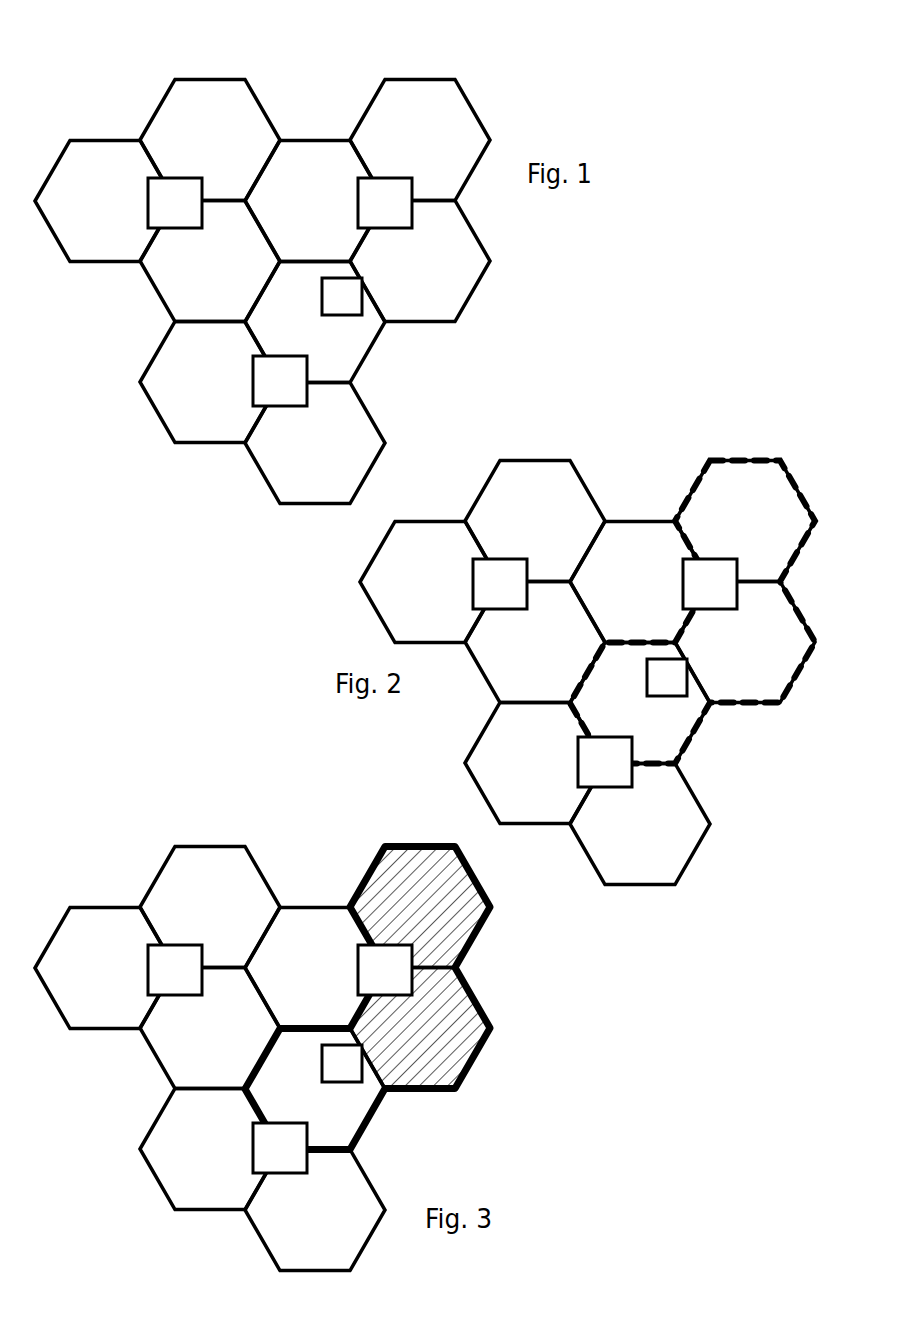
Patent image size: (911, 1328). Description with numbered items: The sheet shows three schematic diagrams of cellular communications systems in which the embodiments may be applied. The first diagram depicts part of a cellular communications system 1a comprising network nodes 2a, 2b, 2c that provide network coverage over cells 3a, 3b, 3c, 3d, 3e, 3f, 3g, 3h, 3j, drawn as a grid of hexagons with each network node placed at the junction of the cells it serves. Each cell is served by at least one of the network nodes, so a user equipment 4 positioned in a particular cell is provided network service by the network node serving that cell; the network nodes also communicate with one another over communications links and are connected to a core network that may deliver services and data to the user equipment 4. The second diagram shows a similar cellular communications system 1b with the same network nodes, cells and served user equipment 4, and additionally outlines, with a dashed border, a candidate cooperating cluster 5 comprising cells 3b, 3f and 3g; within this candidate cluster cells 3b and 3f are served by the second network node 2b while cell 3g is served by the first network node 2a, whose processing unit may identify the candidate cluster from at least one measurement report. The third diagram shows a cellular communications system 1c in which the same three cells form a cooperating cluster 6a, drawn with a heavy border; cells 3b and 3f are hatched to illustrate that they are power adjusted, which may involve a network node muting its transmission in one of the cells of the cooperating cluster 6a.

In FIG. 1, the cellular communications system 1a is at (140, 54).
In FIG. 2, the cellular communications system 1b is at (596, 640).
In FIG. 3, the cellular communications system 1c is at (295, 1023).
In FIG. 1, the first network node 2a is at (293, 393).
In FIG. 2, the first network node 2a is at (605, 762).
In FIG. 3, the first network node 2a is at (280, 1148).
In FIG. 1, the second network node 2b is at (398, 215).
In FIG. 2, the second network node 2b is at (710, 584).
In FIG. 3, the second network node 2b is at (385, 970).
In FIG. 1, the network node 2c is at (188, 215).
In FIG. 2, the network node 2c is at (500, 584).
In FIG. 3, the network node 2c is at (175, 970).
In FIG. 1, the cell 3a is at (223, 156).
In FIG. 2, the cell 3a is at (535, 520).
In FIG. 3, the cell 3a is at (210, 906).
In FIG. 1, the cell 3b is at (433, 156).
In FIG. 2, the cell 3b is at (745, 520).
In FIG. 3, the cell 3b is at (420, 906).
In FIG. 1, the cell 3c is at (118, 217).
In FIG. 2, the cell 3c is at (430, 581).
In FIG. 3, the cell 3c is at (105, 967).
In FIG. 1, the cell 3d is at (328, 217).
In FIG. 2, the cell 3d is at (640, 581).
In FIG. 3, the cell 3d is at (315, 967).
In FIG. 1, the cell 3e is at (223, 277).
In FIG. 2, the cell 3e is at (535, 641).
In FIG. 3, the cell 3e is at (210, 1027).
In FIG. 1, the cell 3f is at (433, 277).
In FIG. 2, the cell 3f is at (745, 641).
In FIG. 3, the cell 3f is at (420, 1027).
In FIG. 1, the cell 3g is at (328, 338).
In FIG. 2, the cell 3g is at (640, 702).
In FIG. 3, the cell 3g is at (315, 1088).
In FIG. 1, the cell 3h is at (223, 398).
In FIG. 2, the cell 3h is at (535, 762).
In FIG. 3, the cell 3h is at (210, 1148).
In FIG. 1, the cell 3j is at (328, 459).
In FIG. 2, the cell 3j is at (640, 823).
In FIG. 3, the cell 3j is at (315, 1209).
In FIG. 1, the user equipment 4 is at (349, 309).
In FIG. 2, the user equipment 4 is at (667, 677).
In FIG. 3, the user equipment 4 is at (342, 1063).
In FIG. 2, the candidate cooperating cluster 5 is at (701, 611).
In FIG. 3, the cooperating cluster 6a is at (400, 997).